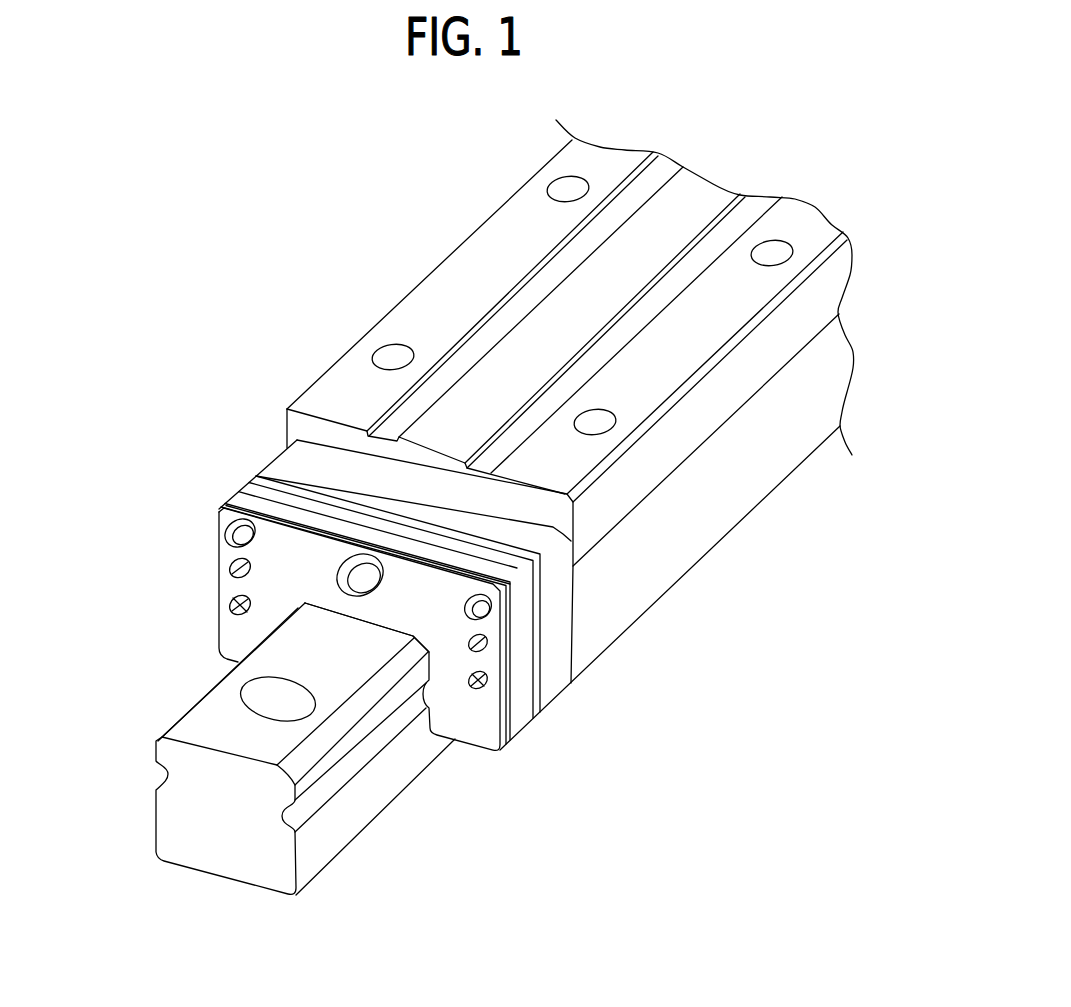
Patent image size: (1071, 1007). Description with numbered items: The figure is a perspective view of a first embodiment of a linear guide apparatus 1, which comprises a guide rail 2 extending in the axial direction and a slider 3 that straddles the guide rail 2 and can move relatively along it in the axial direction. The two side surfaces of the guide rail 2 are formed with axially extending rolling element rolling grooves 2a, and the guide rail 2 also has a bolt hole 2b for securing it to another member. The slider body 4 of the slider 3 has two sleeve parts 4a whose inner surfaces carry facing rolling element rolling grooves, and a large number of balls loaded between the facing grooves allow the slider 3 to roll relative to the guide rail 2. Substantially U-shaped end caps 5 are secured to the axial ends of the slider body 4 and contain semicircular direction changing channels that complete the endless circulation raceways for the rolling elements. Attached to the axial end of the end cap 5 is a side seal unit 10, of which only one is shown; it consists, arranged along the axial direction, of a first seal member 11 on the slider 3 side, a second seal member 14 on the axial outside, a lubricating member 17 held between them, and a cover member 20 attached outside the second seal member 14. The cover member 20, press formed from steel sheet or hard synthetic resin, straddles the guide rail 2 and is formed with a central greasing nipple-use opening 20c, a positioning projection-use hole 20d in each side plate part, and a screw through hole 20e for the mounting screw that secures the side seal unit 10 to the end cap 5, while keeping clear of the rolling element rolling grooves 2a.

The linear guide apparatus 1 is at (410, 160).
The guide rail 2 is at (217, 725).
The rolling element rolling groove 2a is at (167, 771).
The bolt hole 2b is at (255, 690).
The slider 3 is at (378, 313).
The slider body 4 is at (463, 270).
The sleeve part 4a is at (697, 525).
The end cap 5 is at (288, 460).
The side seal unit 10 is at (570, 790).
The first seal member 11 is at (542, 716).
The second seal member 14 is at (512, 743).
The lubricating member 17 is at (528, 729).
The cover member 20 is at (482, 750).
The greasing nipple-use opening 20c is at (335, 568).
The positioning projection-use hole 20d is at (228, 573).
The screw through hole 20e is at (228, 606).